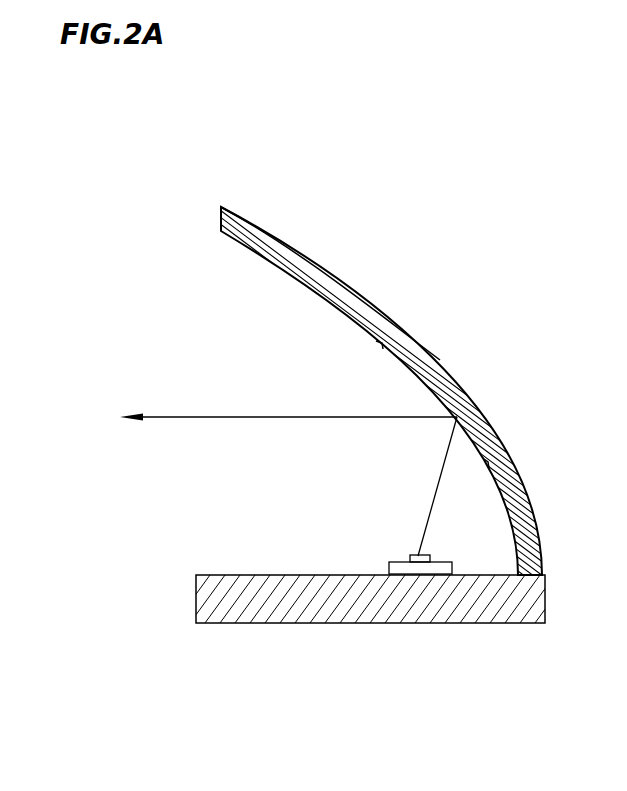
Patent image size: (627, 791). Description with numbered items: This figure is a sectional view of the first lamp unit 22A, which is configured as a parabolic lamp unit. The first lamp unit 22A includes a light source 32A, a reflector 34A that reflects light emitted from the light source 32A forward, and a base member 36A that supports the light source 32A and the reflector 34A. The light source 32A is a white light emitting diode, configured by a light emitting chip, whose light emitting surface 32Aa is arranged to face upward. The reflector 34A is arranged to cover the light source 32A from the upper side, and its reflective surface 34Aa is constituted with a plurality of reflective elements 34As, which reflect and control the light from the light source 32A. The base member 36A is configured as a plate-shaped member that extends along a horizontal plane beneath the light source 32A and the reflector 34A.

The first lamp unit 22A is at (473, 208).
The reflector 34A is at (450, 370).
The reflective surface 34Aa is at (282, 273).
The reflective elements 34As is at (400, 363).
The light source 32A is at (413, 555).
The light emitting surface 32Aa is at (417, 557).
The base member 36A is at (267, 625).